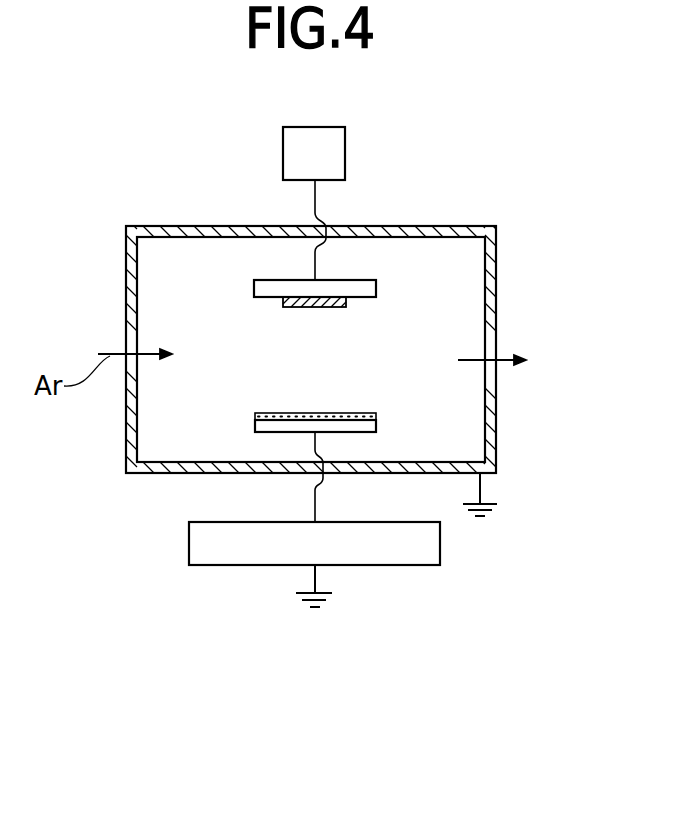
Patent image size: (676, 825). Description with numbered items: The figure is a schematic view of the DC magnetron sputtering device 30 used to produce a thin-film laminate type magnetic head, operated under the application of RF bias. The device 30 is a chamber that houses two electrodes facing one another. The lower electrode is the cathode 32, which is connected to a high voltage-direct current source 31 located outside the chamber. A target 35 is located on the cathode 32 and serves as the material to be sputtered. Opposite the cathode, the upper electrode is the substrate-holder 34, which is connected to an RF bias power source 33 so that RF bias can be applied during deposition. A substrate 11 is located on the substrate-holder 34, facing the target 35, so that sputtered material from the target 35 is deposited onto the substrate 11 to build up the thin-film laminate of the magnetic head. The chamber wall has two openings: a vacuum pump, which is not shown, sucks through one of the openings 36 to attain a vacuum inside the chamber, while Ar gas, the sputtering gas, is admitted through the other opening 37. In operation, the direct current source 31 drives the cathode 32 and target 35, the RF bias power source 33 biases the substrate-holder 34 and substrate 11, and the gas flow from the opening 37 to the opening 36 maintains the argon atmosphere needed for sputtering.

The DC magnetron sputtering device 30 is at (453, 213).
The high voltage-direct current source 31 is at (427, 565).
The cathode 32 is at (256, 430).
The RF bias power source 33 is at (345, 162).
The substrate-holder 34 is at (373, 290).
The target 35 is at (275, 410).
The opening 36 is at (493, 338).
The opening 37 is at (127, 338).
The substrate 11 is at (346, 304).